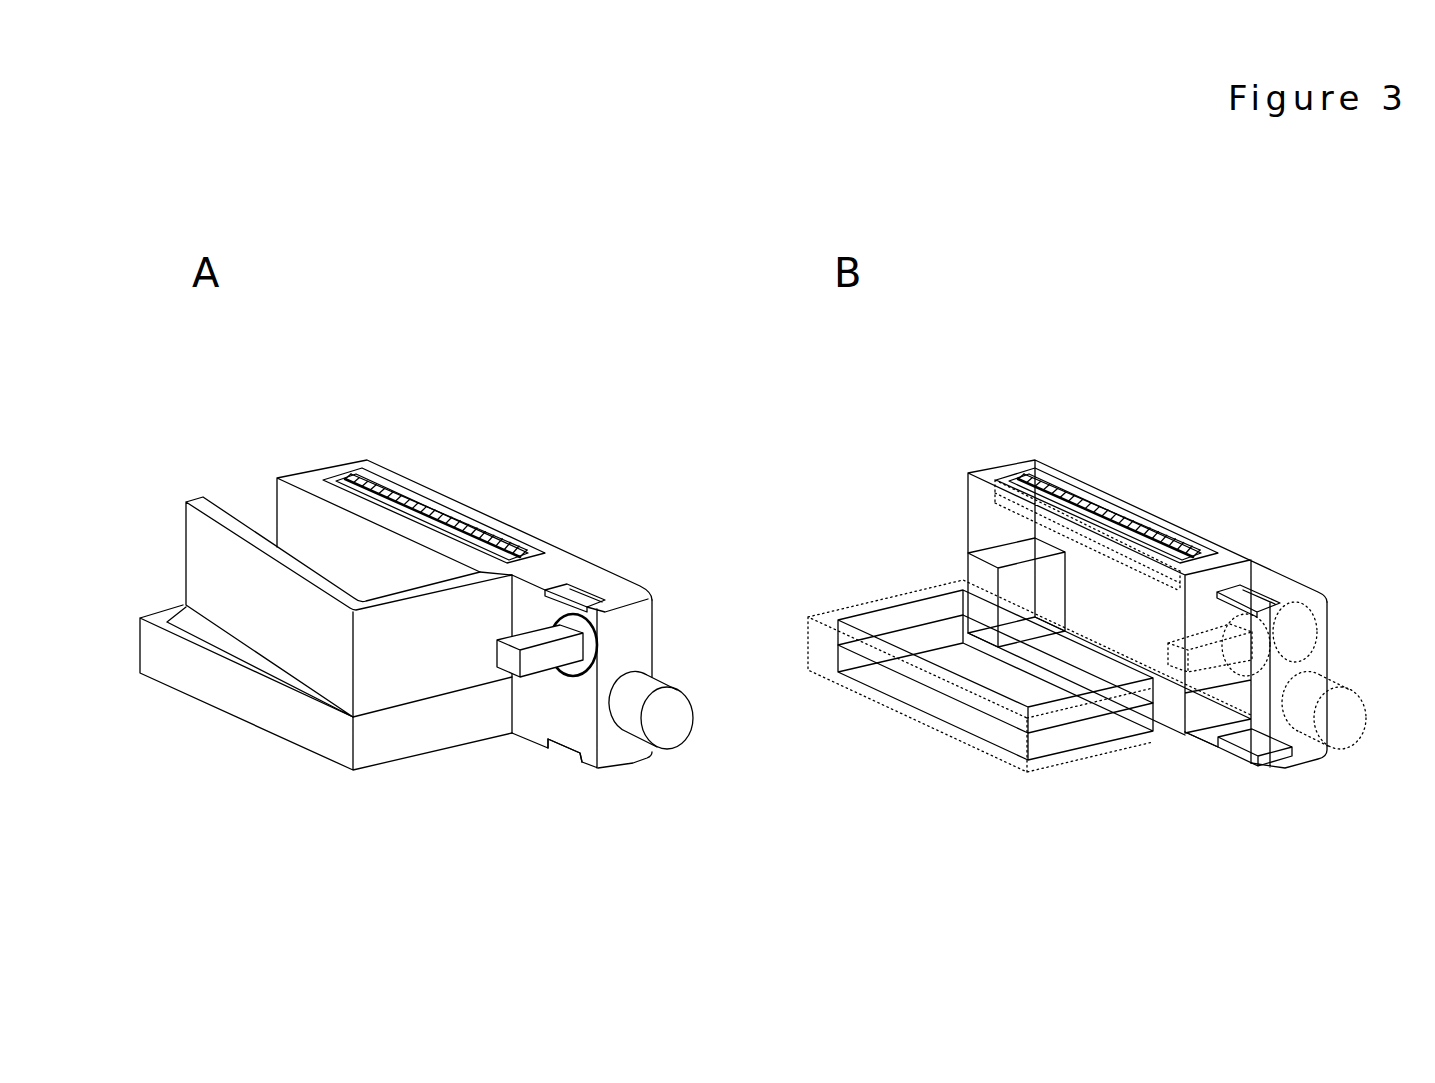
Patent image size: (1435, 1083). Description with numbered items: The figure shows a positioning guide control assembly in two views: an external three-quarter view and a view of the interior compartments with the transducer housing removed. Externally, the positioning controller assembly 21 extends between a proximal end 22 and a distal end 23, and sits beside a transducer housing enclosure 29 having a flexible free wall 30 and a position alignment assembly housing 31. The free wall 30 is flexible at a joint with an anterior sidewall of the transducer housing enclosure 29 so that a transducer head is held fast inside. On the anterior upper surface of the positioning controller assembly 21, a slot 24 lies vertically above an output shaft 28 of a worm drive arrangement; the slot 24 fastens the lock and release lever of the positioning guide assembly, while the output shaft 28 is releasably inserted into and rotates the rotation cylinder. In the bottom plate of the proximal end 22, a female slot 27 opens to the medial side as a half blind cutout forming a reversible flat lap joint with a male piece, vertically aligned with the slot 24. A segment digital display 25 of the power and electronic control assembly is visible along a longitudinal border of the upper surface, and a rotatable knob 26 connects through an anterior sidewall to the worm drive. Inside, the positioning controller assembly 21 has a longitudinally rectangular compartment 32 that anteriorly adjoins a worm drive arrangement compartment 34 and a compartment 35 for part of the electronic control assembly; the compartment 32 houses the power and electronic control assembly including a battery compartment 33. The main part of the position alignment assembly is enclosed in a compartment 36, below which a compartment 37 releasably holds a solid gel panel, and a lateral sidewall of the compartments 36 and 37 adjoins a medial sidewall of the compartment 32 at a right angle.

The positioning controller assembly 21 is at (520, 532).
The proximal end 22 is at (652, 590).
The distal end 23 is at (378, 468).
The slot 24 is at (572, 584).
The segment digital display 25 is at (437, 500).
The rotatable knob 26 is at (668, 752).
The female slot 27 is at (577, 755).
The output shaft 28 is at (535, 678).
The transducer housing enclosure 29 is at (440, 673).
The flexible free wall 30 is at (187, 500).
The position alignment assembly housing 31 is at (277, 723).
The longitudinally rectangular compartment 32 is at (980, 507).
The battery compartment 33 is at (980, 572).
The worm drive arrangement compartment 34 is at (1317, 657).
The compartment of a part of an electronic control assembly 35 is at (1205, 735).
The compartment 36 is at (908, 668).
The compartment 37 is at (937, 707).